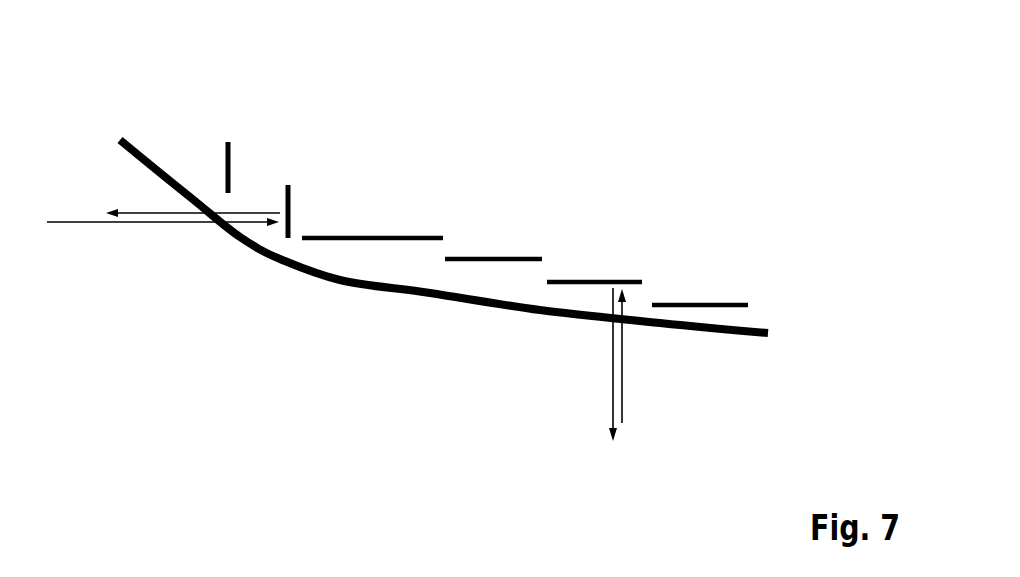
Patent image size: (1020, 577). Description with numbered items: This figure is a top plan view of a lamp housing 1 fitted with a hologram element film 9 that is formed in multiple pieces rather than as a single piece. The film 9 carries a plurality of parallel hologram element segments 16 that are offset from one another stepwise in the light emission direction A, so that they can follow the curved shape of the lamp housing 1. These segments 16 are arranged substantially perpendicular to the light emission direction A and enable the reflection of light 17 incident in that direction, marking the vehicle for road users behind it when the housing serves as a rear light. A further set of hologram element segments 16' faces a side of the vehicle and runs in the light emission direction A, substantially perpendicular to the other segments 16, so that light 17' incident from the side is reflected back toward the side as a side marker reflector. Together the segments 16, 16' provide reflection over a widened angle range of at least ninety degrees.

The lamp housing 1 is at (444, 236).
The hologram element film 9 is at (493, 141).
The hologram element segments 16 is at (525, 238).
The hologram element segments 16' is at (299, 154).
The light 17 is at (584, 364).
The light 17' is at (163, 258).
The light emission direction A is at (342, 383).